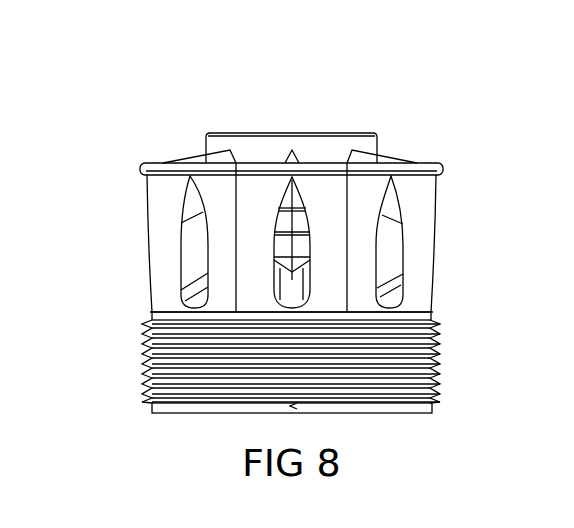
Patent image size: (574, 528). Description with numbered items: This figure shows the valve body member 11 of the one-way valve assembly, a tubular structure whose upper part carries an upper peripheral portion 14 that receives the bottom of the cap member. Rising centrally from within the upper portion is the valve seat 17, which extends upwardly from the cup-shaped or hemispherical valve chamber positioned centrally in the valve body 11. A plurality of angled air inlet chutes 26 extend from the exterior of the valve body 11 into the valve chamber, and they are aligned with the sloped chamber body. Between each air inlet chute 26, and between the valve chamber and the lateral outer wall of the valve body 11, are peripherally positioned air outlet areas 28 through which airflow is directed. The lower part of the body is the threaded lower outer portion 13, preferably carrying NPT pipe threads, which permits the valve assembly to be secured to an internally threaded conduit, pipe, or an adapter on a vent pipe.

The valve body member 11 is at (438, 242).
The threaded lower outer portion 13 is at (143, 363).
The upper peripheral portion 14 is at (142, 166).
The valve seat 17 is at (320, 132).
The air inlet chutes 26 is at (193, 258).
The air outlet areas 28 is at (199, 160).